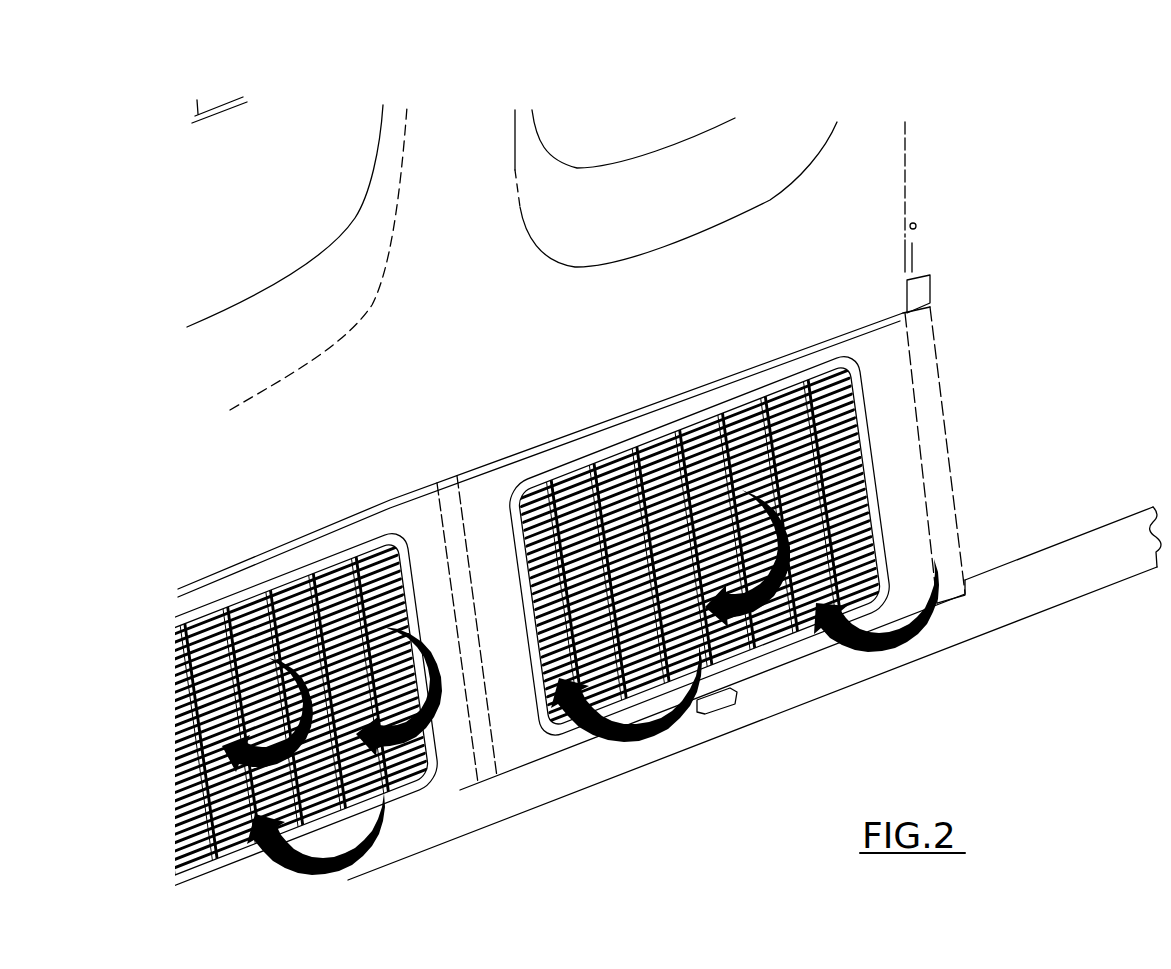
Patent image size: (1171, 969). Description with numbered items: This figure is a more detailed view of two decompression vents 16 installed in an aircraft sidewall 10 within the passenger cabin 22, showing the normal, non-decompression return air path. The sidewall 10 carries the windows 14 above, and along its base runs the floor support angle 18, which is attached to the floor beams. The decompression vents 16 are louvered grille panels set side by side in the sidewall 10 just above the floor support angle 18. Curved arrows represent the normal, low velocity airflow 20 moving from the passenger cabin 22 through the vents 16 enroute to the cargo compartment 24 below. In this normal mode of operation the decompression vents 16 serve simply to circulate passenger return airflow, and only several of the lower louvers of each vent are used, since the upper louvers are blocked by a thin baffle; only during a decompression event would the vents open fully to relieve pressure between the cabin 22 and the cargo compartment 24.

The aircraft sidewall 10 is at (770, 335).
The windows 14 is at (343, 340).
The decompression vents 16 is at (562, 437).
The floor support angle 18 is at (1050, 548).
The low velocity airflow 20 is at (250, 746).
The passenger cabin 22 is at (1000, 436).
The cargo compartment 24 is at (692, 842).